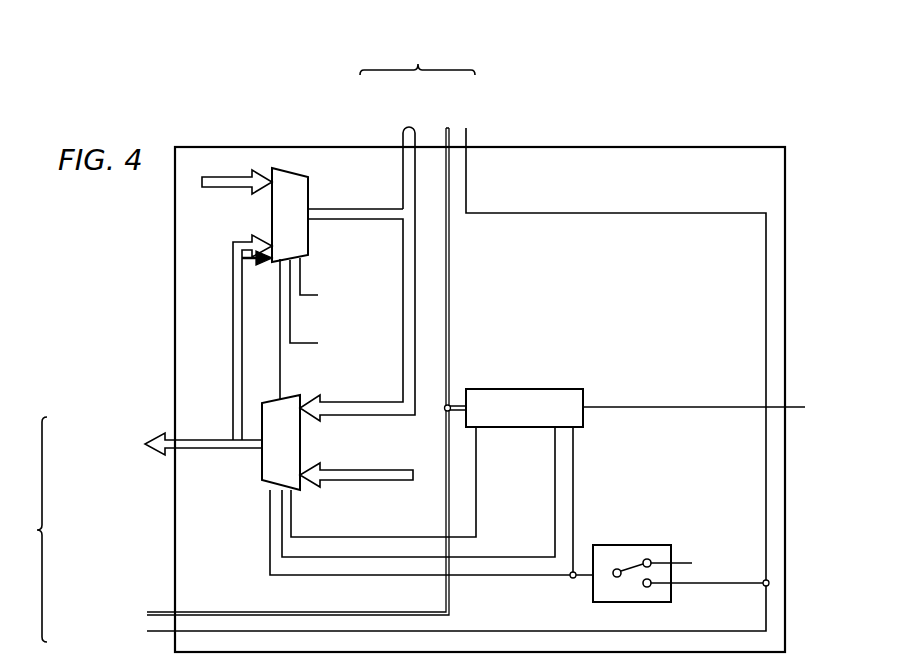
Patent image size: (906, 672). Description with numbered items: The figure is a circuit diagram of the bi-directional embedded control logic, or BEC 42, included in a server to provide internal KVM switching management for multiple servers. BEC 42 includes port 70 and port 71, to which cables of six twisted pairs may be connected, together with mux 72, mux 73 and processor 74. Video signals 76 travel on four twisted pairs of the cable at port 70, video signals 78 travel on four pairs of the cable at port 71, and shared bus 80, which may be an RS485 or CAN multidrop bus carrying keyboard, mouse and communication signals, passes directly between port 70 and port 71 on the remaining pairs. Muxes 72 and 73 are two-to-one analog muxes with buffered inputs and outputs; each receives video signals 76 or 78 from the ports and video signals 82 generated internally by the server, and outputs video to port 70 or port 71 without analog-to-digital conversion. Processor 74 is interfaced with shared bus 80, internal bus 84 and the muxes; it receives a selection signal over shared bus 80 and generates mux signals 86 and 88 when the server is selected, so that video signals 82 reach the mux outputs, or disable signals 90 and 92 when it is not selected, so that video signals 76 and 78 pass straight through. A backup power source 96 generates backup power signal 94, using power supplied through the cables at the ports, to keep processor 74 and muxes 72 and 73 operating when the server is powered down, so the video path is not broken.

The BEC 42 is at (612, 147).
The port 70 is at (417, 80).
The port 71 is at (136, 529).
The mux 72 is at (259, 462).
The mux 73 is at (312, 200).
The processor 74 is at (538, 389).
The video signals 76 is at (402, 304).
The video signals 78 is at (232, 383).
The shared bus 80 is at (450, 310).
The video signals 82 is at (243, 197).
The internal bus 84 is at (660, 406).
The mux signal 86 is at (476, 500).
The mux signal 88 is at (310, 273).
The disable signal 90 is at (551, 462).
The disable signal 92 is at (295, 333).
The backup power signal 94 is at (283, 378).
The backup power source 96 is at (632, 545).